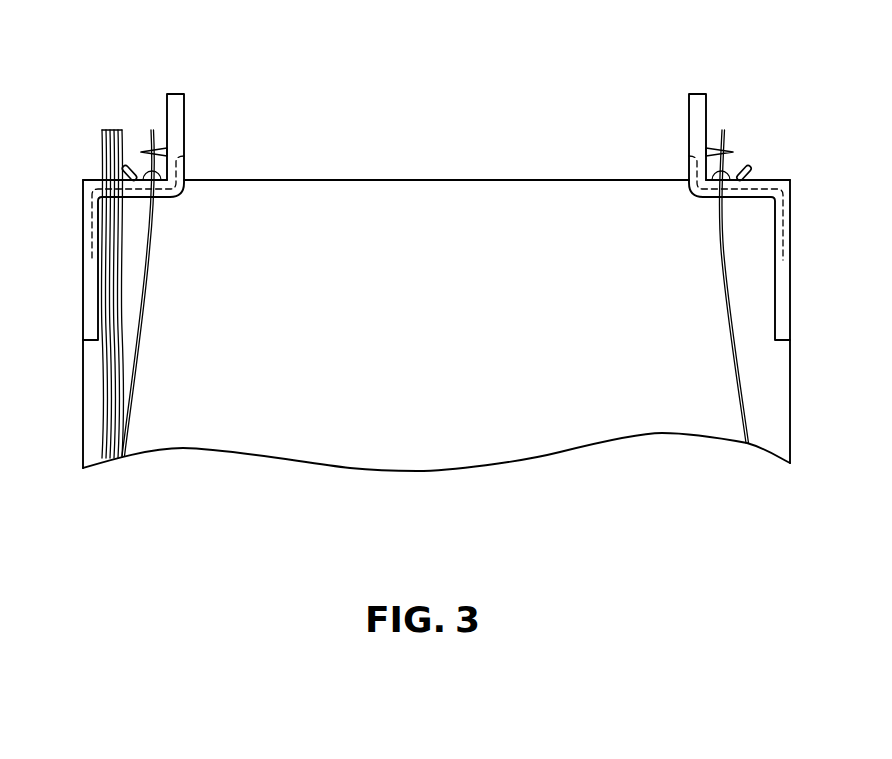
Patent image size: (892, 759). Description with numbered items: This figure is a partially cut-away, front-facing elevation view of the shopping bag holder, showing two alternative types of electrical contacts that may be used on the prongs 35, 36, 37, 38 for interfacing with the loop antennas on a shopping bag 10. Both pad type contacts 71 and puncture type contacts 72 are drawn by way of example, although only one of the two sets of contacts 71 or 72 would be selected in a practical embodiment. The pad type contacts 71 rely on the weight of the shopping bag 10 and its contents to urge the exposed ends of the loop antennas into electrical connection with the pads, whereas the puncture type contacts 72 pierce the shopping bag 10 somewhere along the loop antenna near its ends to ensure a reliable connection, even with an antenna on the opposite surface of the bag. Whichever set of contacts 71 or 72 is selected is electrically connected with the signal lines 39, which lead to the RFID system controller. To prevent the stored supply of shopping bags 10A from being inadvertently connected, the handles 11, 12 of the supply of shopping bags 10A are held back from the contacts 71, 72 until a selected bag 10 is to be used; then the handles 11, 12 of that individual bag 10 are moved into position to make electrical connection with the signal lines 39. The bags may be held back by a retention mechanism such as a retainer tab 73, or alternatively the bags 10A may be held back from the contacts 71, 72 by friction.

The shopping bag 10 is at (146, 293).
The supply of shopping bags 10A is at (110, 117).
The handle 11 is at (154, 149).
The handle 12 is at (721, 148).
The prong 35 is at (219, 106).
The prong 36 is at (177, 94).
The prong 37 is at (657, 106).
The prong 38 is at (697, 94).
The signal lines 39 is at (92, 233).
The pad type contacts 71 is at (165, 201).
The puncture type contacts 72 is at (172, 142).
The retainer tab 73 is at (124, 166).